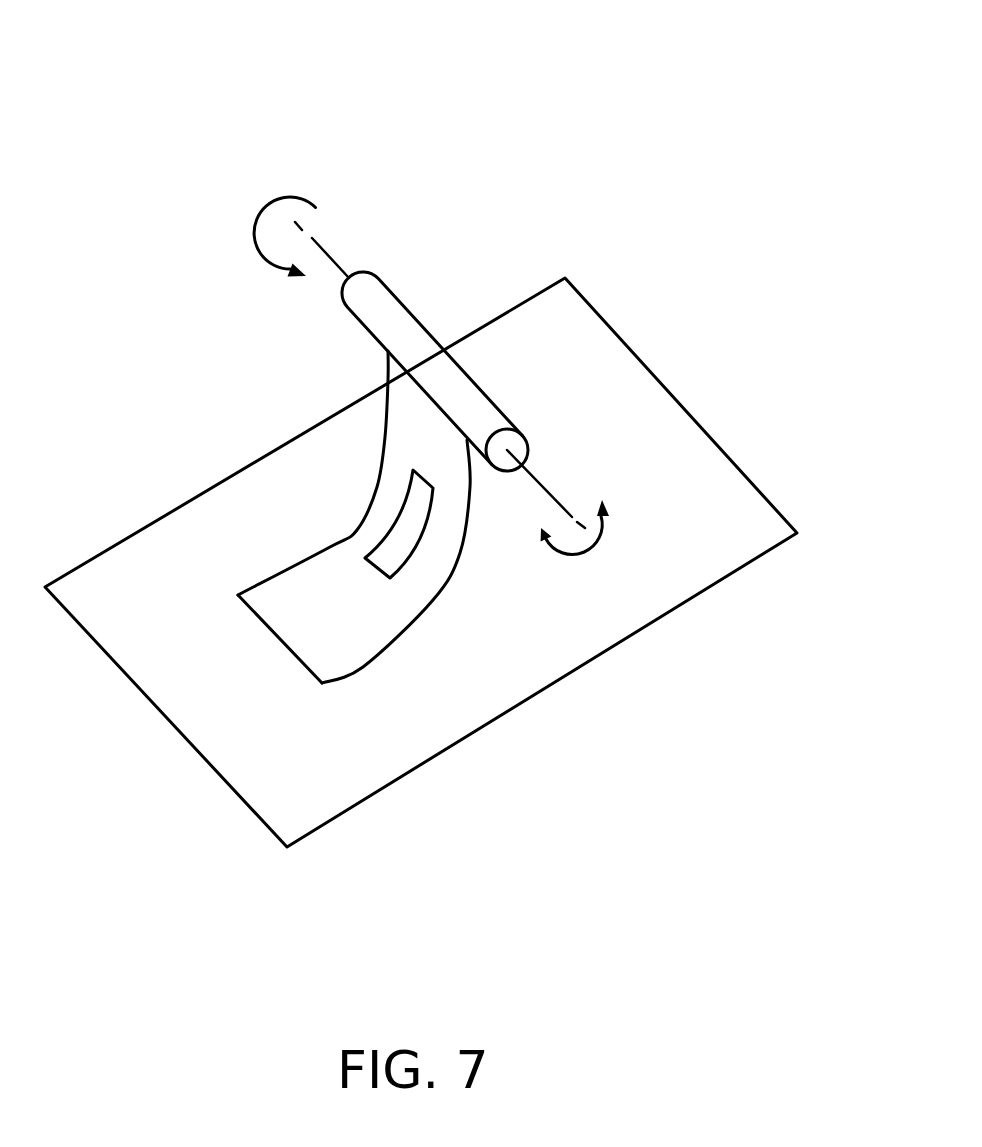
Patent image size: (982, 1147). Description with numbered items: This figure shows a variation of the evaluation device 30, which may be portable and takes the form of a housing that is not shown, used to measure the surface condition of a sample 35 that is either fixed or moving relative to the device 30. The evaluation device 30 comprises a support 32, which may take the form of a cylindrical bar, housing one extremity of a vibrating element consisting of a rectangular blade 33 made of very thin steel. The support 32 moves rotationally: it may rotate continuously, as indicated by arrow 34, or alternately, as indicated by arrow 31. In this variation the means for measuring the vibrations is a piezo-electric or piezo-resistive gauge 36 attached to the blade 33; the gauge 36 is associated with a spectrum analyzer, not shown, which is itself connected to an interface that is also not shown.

The evaluation device 30 is at (632, 210).
The arrow 31 is at (607, 537).
The support 32 is at (363, 313).
The rectangular blade 33 is at (288, 611).
The arrow 34 is at (290, 196).
The sample 35 is at (718, 480).
The piezo-electric or piezo-resistive gauge 36 is at (397, 520).